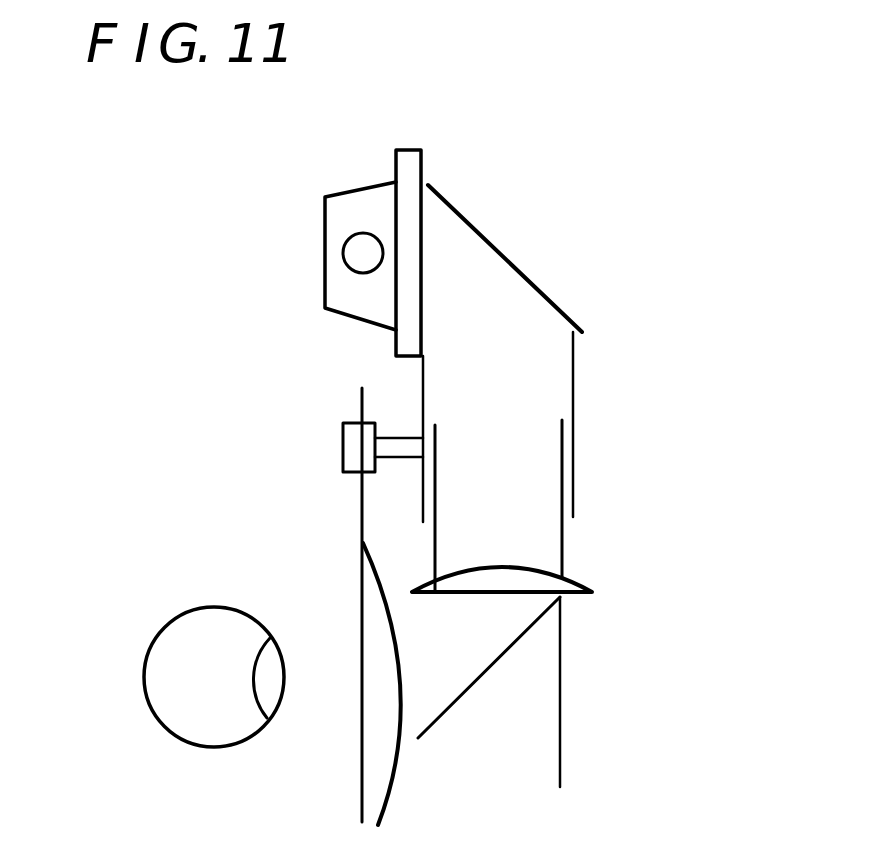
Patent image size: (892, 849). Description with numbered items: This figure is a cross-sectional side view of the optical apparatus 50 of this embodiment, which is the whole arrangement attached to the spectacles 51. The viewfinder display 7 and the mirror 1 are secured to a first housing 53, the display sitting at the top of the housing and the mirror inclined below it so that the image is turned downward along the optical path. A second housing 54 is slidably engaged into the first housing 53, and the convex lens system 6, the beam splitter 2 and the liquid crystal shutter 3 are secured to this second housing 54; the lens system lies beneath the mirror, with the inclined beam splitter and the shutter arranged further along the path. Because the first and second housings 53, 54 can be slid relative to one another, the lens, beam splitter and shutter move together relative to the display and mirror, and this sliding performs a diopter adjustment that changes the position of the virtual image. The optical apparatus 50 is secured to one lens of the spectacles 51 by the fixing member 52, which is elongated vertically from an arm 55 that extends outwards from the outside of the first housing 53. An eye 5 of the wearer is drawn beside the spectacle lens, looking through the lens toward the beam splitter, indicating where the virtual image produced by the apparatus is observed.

The mirror 1 is at (507, 257).
The beam splitter 2 is at (442, 717).
The liquid crystal shutter 3 is at (560, 712).
The eye of observer 5 is at (215, 735).
The convex lens system 6 is at (588, 587).
The viewfinder display 7 is at (423, 157).
The optical apparatus 50 is at (590, 310).
The spectacles 51 is at (382, 620).
The fixing member 52 is at (363, 790).
The first housing 53 is at (573, 408).
The second housing 54 is at (558, 475).
The arm 55 is at (398, 437).